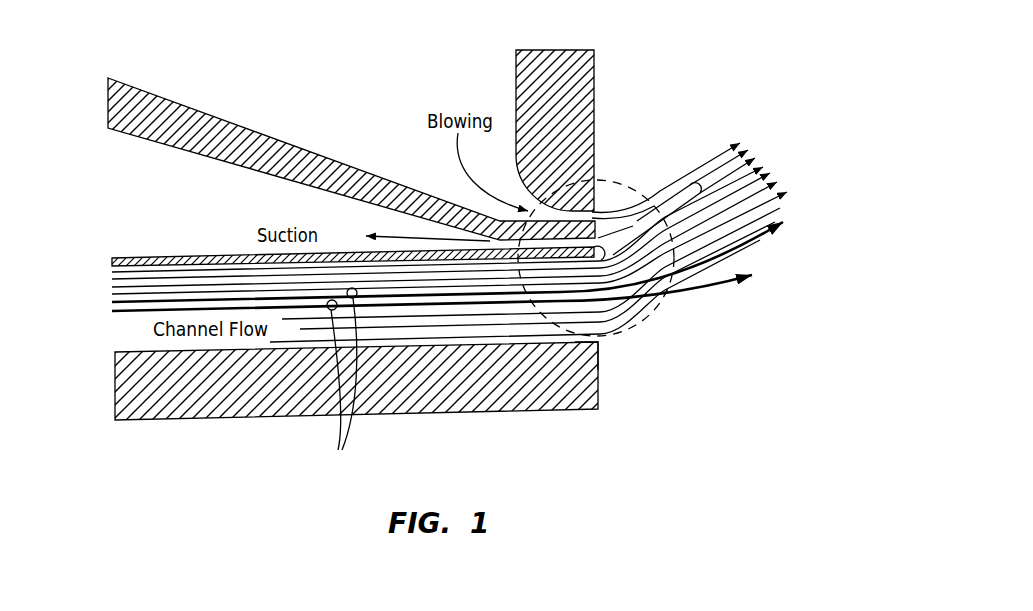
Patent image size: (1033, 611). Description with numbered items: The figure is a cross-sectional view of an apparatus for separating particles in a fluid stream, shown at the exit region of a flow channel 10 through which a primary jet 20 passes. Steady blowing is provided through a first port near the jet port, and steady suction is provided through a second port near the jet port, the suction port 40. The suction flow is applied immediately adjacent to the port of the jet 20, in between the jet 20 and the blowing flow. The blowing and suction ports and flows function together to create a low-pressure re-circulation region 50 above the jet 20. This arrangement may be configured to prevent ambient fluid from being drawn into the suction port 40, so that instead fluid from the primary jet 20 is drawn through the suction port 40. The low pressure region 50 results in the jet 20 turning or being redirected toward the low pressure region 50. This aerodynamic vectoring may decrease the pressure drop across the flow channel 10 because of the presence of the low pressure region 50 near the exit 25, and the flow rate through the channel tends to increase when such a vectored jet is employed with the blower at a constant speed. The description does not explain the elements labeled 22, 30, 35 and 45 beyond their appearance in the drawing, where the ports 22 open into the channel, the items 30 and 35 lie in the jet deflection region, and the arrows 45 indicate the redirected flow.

The flow channel 10 is at (135, 350).
The jet 20 is at (100, 296).
The ports 22 is at (331, 375).
The exit 25 is at (598, 338).
The blowing jet 30 is at (608, 203).
The deflector vane 35 is at (648, 206).
The suction port 40 is at (602, 238).
The deflected flow 45 is at (700, 268).
The low-pressure re-circulation region 50 is at (608, 180).